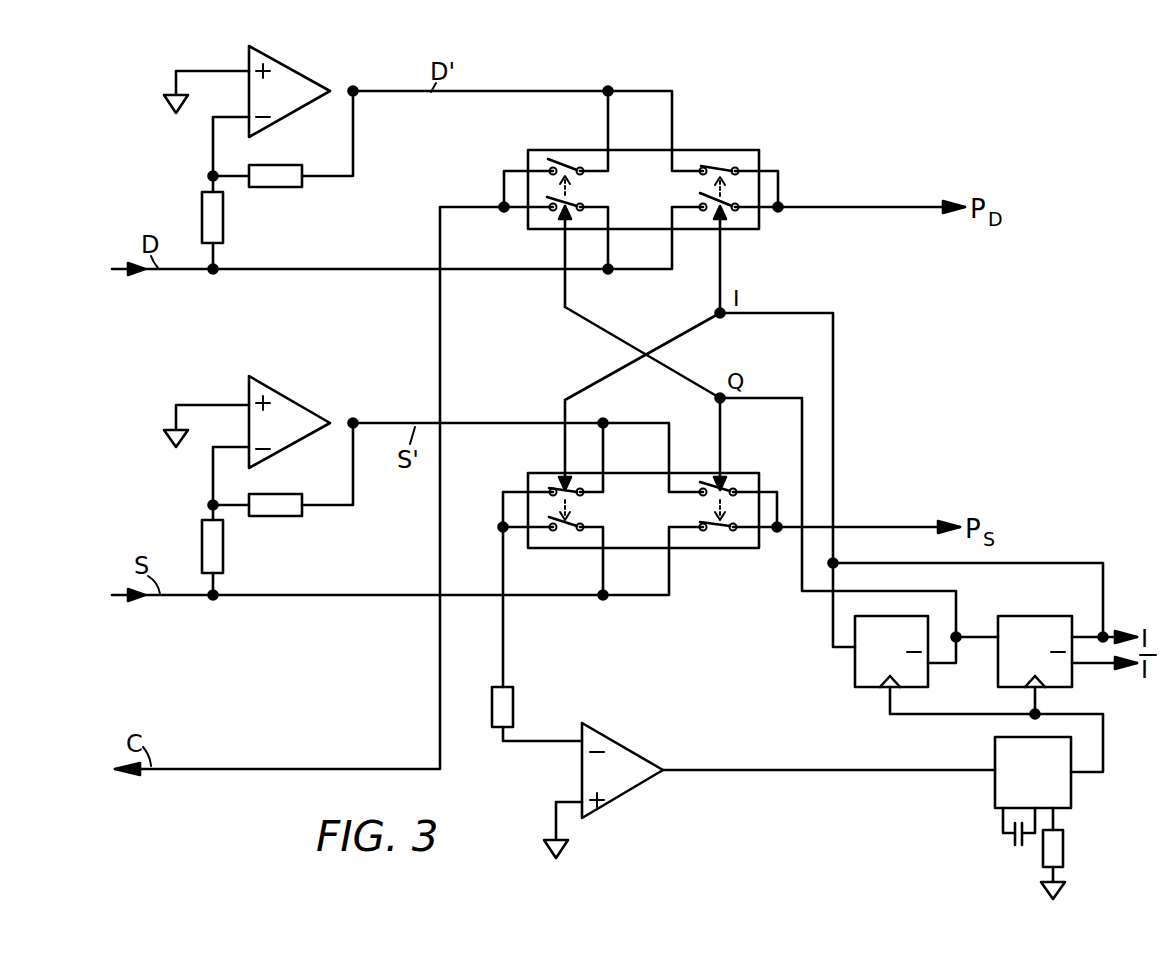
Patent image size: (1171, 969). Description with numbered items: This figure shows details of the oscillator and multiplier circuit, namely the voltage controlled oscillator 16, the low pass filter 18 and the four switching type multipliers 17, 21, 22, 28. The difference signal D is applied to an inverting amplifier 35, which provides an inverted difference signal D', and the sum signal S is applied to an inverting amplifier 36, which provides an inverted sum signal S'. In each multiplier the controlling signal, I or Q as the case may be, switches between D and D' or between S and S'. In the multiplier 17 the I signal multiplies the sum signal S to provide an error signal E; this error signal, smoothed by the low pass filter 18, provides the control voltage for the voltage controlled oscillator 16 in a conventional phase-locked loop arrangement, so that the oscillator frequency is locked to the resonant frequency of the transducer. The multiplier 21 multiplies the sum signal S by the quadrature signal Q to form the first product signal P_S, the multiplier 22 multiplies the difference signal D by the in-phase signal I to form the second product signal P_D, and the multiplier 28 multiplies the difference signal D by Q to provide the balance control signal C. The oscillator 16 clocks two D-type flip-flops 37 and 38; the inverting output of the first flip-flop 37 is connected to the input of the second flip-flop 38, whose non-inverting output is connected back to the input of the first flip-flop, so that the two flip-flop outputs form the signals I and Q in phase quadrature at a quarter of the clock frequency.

The inverting amplifier 35 is at (310, 83).
The inverting amplifier 36 is at (298, 405).
The switching type multiplier 28 is at (528, 229).
The switching type multiplier 22 is at (759, 229).
The switching type multiplier 17 is at (572, 548).
The switching type multiplier 21 is at (738, 473).
The low pass filter 18 is at (636, 794).
The first D-type flip-flop 37 is at (871, 687).
The second D-type flip-flop 38 is at (1028, 616).
The voltage controlled oscillator 16 is at (1071, 802).